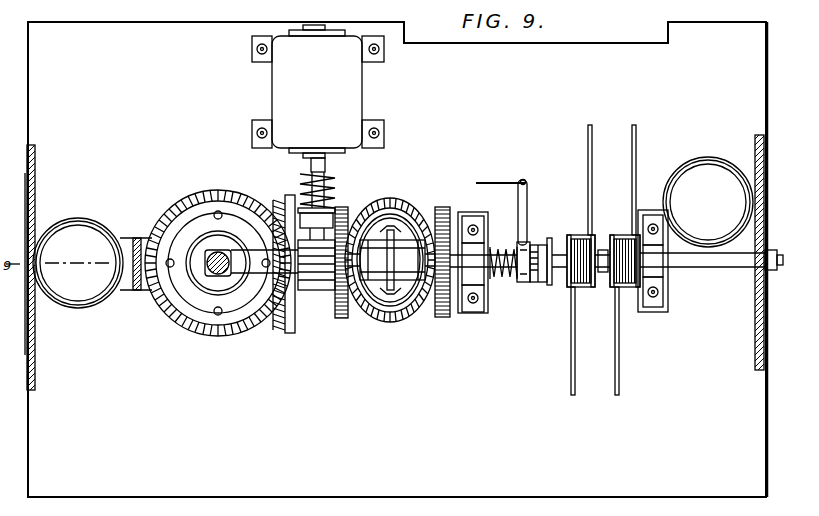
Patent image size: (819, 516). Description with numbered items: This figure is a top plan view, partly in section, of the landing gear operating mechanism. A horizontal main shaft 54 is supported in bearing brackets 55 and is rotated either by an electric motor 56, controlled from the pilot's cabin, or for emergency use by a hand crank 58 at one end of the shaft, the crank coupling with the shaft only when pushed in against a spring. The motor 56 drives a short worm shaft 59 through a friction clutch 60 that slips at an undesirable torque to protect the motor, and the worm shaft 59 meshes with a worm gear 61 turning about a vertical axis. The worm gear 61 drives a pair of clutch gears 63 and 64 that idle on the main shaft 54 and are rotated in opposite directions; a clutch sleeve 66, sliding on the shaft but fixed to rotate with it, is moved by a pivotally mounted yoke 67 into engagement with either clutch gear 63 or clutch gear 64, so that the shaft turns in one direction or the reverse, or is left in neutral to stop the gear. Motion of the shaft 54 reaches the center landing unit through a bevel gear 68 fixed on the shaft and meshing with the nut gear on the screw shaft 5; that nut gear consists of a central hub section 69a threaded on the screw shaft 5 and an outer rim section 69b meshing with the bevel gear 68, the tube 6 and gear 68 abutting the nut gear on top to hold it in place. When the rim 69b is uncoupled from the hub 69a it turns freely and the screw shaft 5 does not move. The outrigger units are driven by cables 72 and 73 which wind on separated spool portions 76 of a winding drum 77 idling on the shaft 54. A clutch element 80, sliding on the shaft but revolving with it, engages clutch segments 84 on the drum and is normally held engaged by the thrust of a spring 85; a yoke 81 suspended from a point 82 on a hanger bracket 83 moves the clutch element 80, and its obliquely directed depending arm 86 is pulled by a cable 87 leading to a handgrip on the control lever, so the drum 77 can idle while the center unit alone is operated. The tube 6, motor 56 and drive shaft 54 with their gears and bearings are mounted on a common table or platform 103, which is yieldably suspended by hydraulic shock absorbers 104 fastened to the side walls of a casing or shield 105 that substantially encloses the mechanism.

The screw shaft 5 is at (167, 213).
The tube 6 is at (212, 242).
The main shaft 54 is at (720, 268).
The bearing brackets 55 is at (474, 306).
The electric motor 56 is at (275, 78).
The hand crank 58 is at (757, 280).
The worm shaft 59 is at (318, 291).
The friction clutch 60 is at (357, 196).
The worm gear 61 is at (390, 326).
The clutch gear 63 is at (384, 195).
The clutch gear 64 is at (445, 205).
The clutch sleeve 66 is at (408, 250).
The yoke 67 is at (375, 313).
The bevel gear 68 is at (288, 327).
The hub section 69a is at (212, 288).
The rim section 69b is at (190, 298).
The cable 72 is at (636, 160).
The cable 73 is at (587, 138).
The spool portions 76 is at (595, 238).
The winding drum 77 is at (605, 274).
The clutch element 80 is at (525, 284).
The yoke 81 is at (521, 283).
The pivot point 82 is at (532, 246).
The hanger bracket 83 is at (506, 278).
The clutch segments 84 is at (550, 285).
The spring 85 is at (498, 250).
The depending arm 86 is at (523, 205).
The cable 87 is at (501, 175).
The table or platform 103 is at (210, 488).
The hydraulic shock absorbers 104 is at (85, 302).
The casing or shield 105 is at (34, 213).